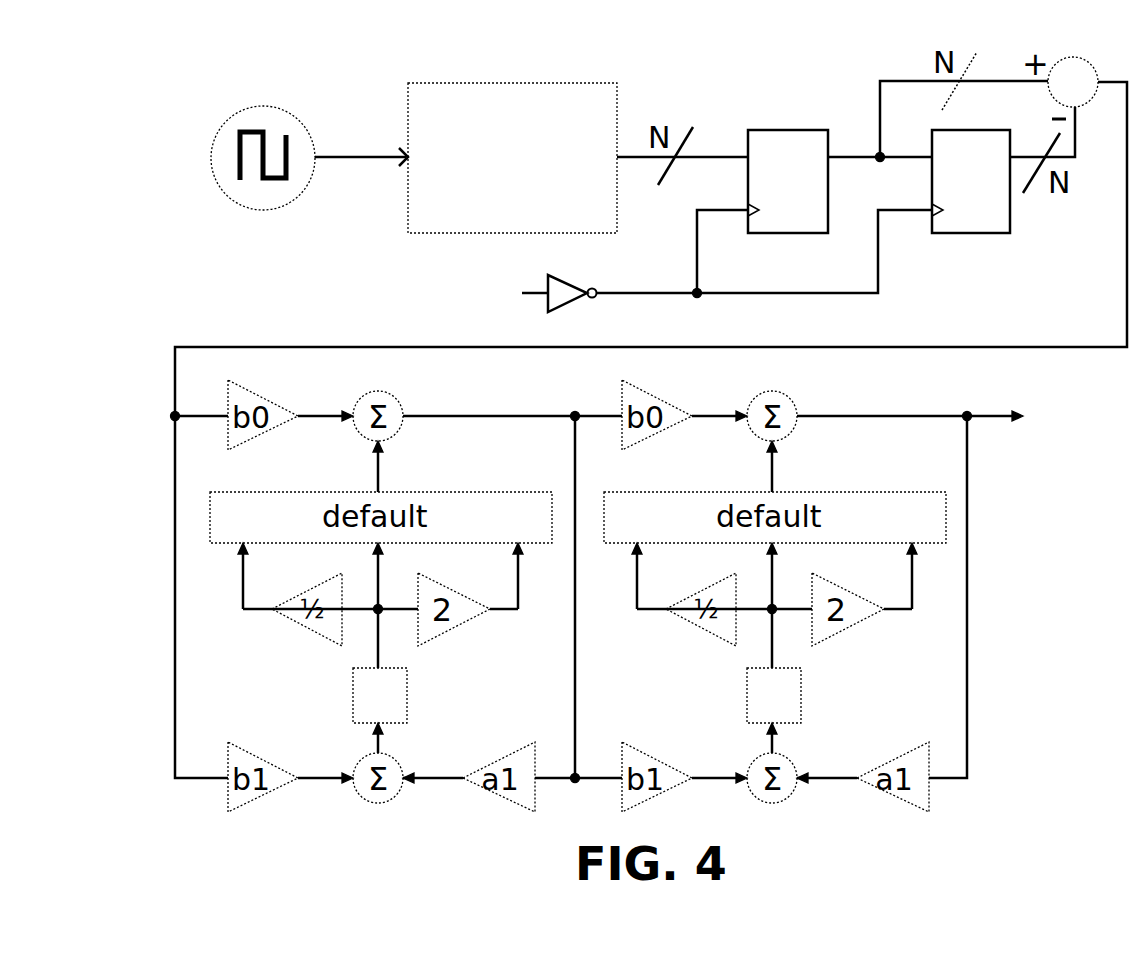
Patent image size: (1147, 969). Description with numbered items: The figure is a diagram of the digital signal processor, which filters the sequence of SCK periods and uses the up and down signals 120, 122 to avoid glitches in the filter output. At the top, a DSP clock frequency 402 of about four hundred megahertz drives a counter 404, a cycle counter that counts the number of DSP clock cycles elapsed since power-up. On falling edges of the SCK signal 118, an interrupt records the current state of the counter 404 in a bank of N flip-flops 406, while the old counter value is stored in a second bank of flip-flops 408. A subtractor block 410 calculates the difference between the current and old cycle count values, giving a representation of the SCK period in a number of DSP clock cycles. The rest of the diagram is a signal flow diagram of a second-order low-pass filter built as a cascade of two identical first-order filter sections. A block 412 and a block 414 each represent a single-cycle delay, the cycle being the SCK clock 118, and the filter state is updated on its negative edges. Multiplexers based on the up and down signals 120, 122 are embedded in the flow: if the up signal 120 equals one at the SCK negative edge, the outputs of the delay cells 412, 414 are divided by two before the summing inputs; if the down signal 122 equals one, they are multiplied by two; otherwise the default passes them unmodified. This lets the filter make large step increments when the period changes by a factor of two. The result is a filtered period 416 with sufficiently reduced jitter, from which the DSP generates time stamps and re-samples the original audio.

The DSP clock frequency 402 is at (375, 106).
The counter 404 is at (535, 192).
The bank of flip-flops 406 is at (765, 279).
The bank of flip-flops 408 is at (952, 279).
The subtractor block 410 is at (1101, 51).
The SCK signal 118 is at (496, 339).
The up signal 120 is at (260, 486).
The down signal 122 is at (523, 486).
The delay cell 412 is at (455, 711).
The delay cell 414 is at (799, 695).
The filtered period 416 is at (1103, 501).